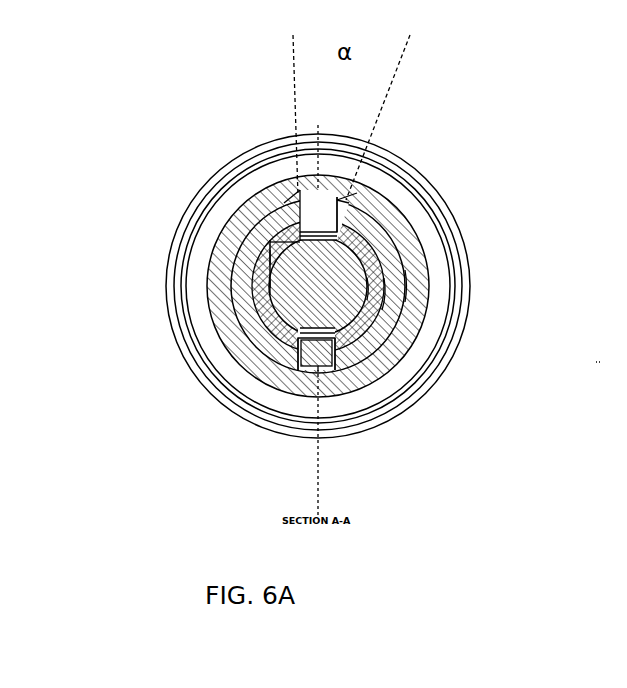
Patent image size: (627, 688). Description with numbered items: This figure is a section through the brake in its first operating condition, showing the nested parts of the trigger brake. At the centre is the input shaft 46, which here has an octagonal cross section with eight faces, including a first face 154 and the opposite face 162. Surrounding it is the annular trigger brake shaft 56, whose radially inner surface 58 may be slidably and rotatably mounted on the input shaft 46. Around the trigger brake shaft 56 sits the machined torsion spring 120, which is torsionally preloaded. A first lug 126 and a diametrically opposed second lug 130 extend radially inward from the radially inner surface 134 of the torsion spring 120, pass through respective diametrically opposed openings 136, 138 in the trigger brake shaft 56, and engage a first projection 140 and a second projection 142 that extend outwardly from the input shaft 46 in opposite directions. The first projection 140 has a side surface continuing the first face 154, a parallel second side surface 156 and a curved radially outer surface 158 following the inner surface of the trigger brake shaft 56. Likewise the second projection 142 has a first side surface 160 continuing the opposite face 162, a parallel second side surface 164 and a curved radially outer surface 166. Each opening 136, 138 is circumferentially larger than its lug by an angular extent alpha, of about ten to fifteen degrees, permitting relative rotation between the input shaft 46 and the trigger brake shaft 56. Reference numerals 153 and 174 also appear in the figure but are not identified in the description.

The torsion spring 120 is at (270, 190).
The second projection 142 is at (390, 334).
The radially inner surface of the trigger brake shaft 58 is at (380, 250).
The input shaft 46 is at (298, 308).
The second side surface of the first projection 156 is at (305, 237).
The radially outer surface of the first projection 158 is at (300, 240).
The first lug 126 is at (340, 222).
The first opening 136 is at (355, 208).
The first projection 140 is at (300, 243).
The core flat side 153 is at (270, 257).
The first face of the input shaft 154 is at (270, 287).
The second lug 130 is at (299, 350).
The second side surface of the second projection 164 is at (332, 346).
The second opening 138 is at (300, 340).
The trigger brake shaft 56 is at (373, 346).
The radially outer surface of the second projection 166 is at (352, 366).
The radially inner surface of the torsion spring 134 is at (405, 290).
The opposite face of the input shaft 162 is at (367, 295).
The first side surface of the second projection 160 is at (368, 317).
The edge feature 174 is at (611, 363).